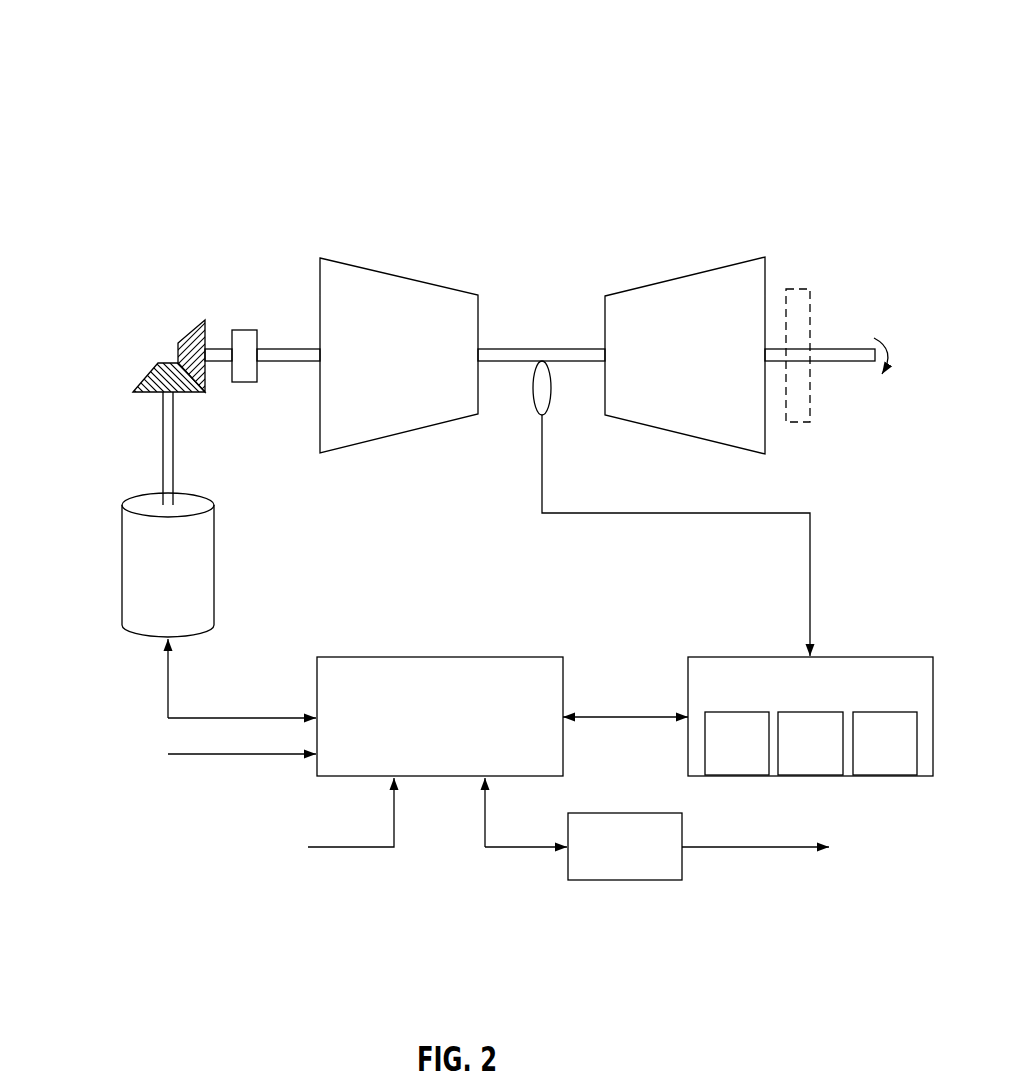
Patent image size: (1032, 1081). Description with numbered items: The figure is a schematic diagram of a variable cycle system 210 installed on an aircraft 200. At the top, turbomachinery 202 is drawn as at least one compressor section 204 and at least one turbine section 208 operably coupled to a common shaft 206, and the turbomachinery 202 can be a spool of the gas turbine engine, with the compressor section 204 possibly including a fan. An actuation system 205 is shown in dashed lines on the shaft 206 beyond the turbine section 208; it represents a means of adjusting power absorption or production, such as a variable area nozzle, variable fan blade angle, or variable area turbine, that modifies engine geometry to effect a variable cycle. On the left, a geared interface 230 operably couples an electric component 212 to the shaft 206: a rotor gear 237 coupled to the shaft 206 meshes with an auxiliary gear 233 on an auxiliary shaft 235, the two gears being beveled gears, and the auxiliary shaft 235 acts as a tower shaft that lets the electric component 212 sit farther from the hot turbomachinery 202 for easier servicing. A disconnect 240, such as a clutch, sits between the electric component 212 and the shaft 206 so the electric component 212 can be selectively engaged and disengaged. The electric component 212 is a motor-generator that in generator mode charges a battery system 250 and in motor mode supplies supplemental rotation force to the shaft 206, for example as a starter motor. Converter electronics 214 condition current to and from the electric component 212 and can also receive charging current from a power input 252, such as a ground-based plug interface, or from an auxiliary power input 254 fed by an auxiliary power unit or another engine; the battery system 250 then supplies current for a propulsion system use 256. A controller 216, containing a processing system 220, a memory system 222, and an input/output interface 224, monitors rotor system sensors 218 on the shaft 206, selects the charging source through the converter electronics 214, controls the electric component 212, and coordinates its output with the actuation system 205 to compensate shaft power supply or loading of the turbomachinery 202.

The aircraft 200 is at (121, 47).
The turbomachinery 202 is at (586, 204).
The compressor section 204 is at (442, 288).
The actuation system 205 is at (800, 290).
The shaft 206 is at (293, 348).
The turbine section 208 is at (642, 285).
The variable cycle system 210 is at (130, 660).
The electric component 212 is at (122, 535).
The converter electronics 214 is at (461, 732).
The controller 216 is at (790, 698).
The rotor system sensors 218 is at (527, 421).
The processing system 220 is at (716, 757).
The memory system 222 is at (789, 757).
The input/output interface 224 is at (864, 757).
The geared interface 230 is at (97, 303).
The auxiliary gear 233 is at (141, 385).
The auxiliary shaft 235 is at (162, 463).
The rotor gear 237 is at (192, 333).
The disconnect 240 is at (246, 383).
The battery system 250 is at (603, 861).
The power input 252 is at (330, 850).
The auxiliary power input 254 is at (197, 756).
The propulsion system use 256 is at (797, 843).